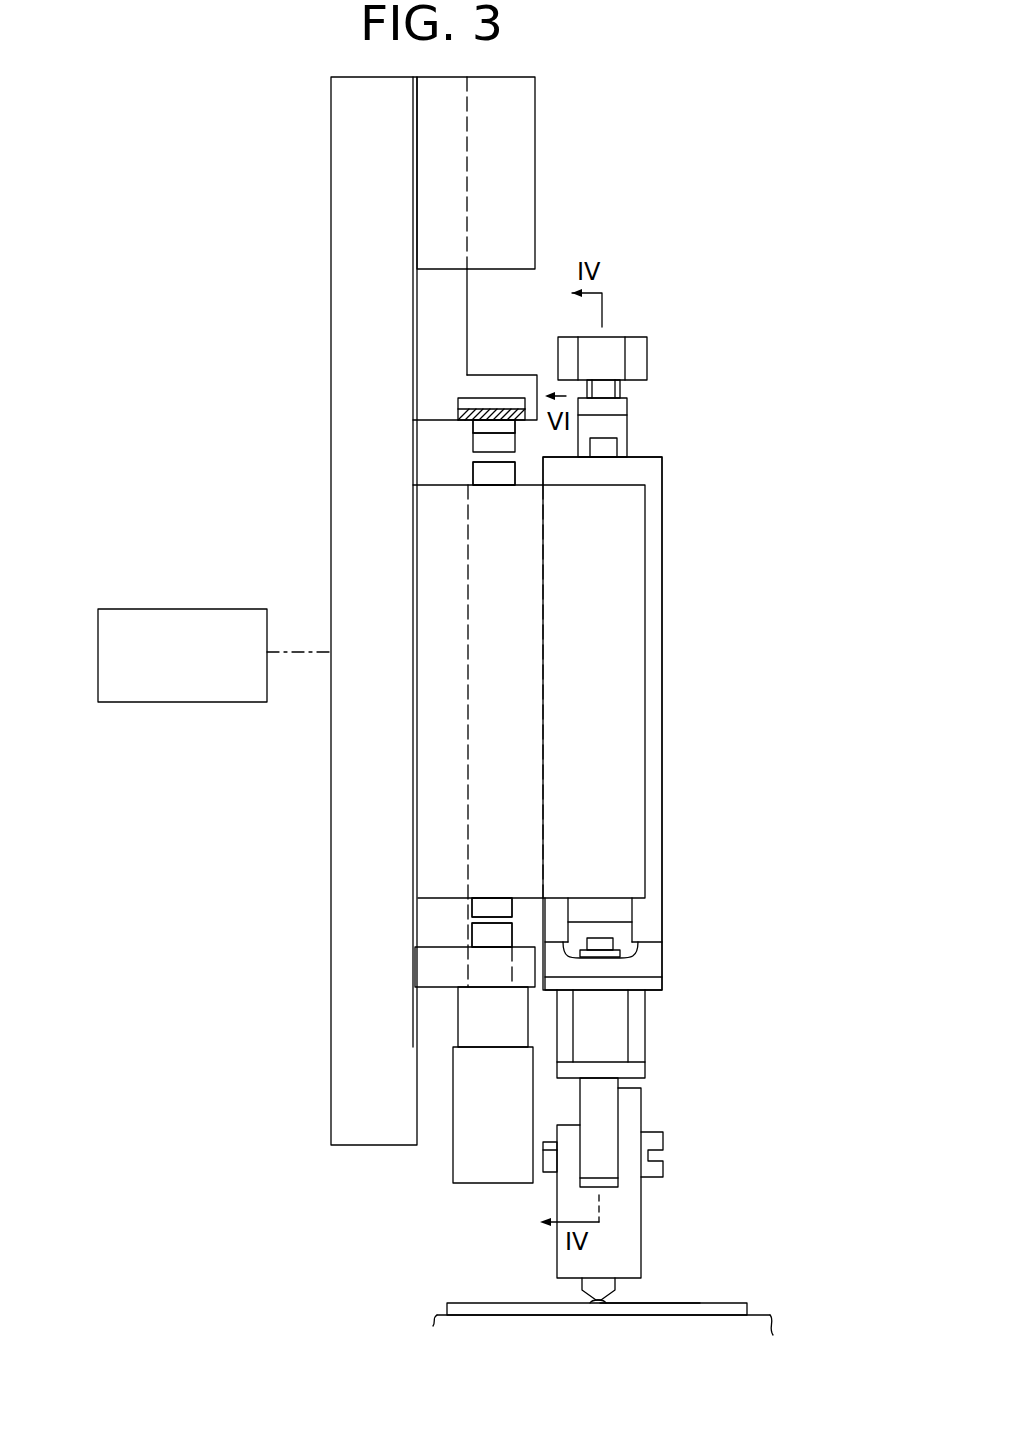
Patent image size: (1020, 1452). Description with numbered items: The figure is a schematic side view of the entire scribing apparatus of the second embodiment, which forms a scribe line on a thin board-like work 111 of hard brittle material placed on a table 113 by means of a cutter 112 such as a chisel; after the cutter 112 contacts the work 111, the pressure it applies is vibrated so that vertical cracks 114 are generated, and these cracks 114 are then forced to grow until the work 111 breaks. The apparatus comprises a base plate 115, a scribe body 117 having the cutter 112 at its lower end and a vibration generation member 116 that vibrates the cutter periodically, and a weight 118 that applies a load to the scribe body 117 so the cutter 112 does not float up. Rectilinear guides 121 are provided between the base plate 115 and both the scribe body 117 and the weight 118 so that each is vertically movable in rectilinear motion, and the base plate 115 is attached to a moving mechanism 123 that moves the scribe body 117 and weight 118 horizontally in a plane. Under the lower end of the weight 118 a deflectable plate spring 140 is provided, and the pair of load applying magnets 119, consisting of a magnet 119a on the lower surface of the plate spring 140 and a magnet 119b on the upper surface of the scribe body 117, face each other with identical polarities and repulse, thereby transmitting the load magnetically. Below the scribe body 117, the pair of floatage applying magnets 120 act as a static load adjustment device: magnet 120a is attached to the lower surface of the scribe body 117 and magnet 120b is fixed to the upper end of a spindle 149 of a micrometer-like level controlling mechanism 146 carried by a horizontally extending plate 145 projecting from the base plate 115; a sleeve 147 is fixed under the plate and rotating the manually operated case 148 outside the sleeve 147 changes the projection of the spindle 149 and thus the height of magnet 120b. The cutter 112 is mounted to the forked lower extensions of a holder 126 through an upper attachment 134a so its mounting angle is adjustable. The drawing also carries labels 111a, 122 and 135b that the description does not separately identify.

The work 111 is at (702, 1303).
The mounting surface of board 111a is at (648, 1303).
The cutter 112 is at (602, 1280).
The table 113 is at (755, 1325).
The vertical cracks 114 is at (597, 1307).
The base plate 115 is at (348, 945).
The vibration generation member 116 is at (617, 822).
The scribe body 117 is at (669, 559).
The weight 118 is at (542, 152).
The load applying magnets 119 is at (467, 455).
The load applying magnet 119a is at (482, 445).
The load applying magnet 119b is at (483, 472).
The floatage applying magnets 120 is at (453, 915).
The floatage applying magnet 120a is at (483, 908).
The floatage applying magnet 120b is at (482, 933).
The rectilinear guide 121 is at (442, 802).
The guide rail 122 is at (425, 305).
The moving mechanism 123 is at (196, 608).
The holder 126 is at (638, 1035).
The upper attachment 134a is at (603, 1122).
The nozzle holder block 135b is at (633, 1207).
The plate spring 140 is at (492, 415).
The horizontally extending plate 145 is at (443, 980).
The level controlling mechanism 146 is at (440, 1020).
The sleeve 147 is at (480, 1020).
The manually operated case 148 is at (463, 1152).
The spindle 149 is at (497, 962).